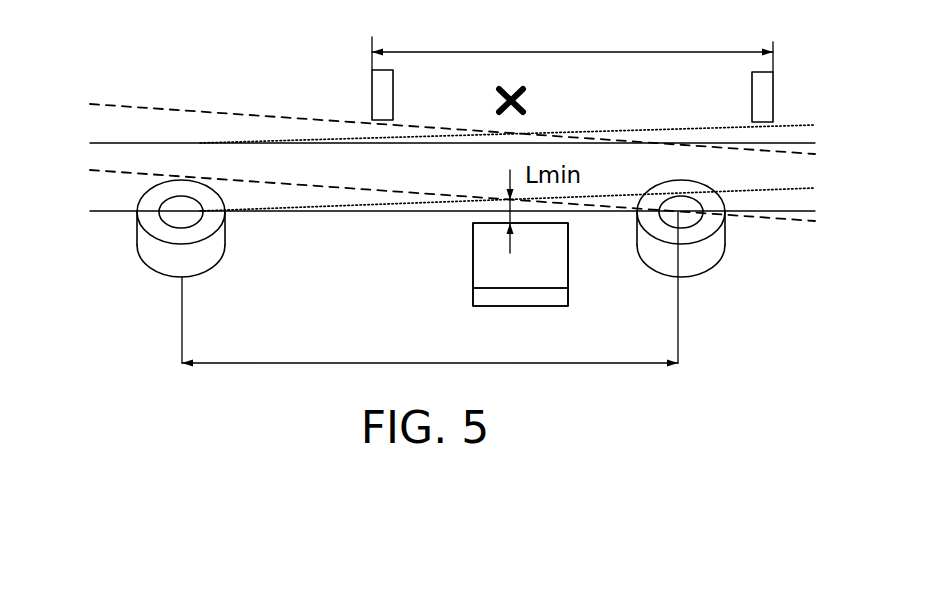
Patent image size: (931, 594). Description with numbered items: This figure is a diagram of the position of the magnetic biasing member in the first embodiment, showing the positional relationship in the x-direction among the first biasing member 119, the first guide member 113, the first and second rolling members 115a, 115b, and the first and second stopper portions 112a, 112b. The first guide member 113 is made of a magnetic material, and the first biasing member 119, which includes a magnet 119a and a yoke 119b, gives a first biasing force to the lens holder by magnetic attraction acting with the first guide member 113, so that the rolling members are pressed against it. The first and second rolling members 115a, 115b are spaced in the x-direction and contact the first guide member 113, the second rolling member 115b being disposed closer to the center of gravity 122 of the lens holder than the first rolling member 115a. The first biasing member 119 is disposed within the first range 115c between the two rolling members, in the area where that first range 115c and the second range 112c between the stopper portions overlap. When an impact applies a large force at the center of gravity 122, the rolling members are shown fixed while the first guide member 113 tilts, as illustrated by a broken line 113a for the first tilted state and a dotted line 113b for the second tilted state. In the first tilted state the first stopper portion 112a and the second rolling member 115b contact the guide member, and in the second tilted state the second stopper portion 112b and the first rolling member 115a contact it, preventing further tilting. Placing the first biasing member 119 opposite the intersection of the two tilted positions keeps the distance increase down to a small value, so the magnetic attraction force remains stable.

The first guide member 113 is at (440, 212).
The broken line 113a is at (196, 112).
The dotted line 113b is at (703, 127).
The first stopper portion 112a is at (370, 117).
The second stopper portion 112b is at (770, 117).
The second range 112c is at (572, 47).
The center of gravity 122 is at (509, 95).
The first biasing member 119 is at (402, 268).
The magnet 119a is at (487, 276).
The yoke 119b is at (485, 298).
The first rolling member 115a is at (157, 262).
The second rolling member 115b is at (712, 252).
The first range 115c is at (430, 289).